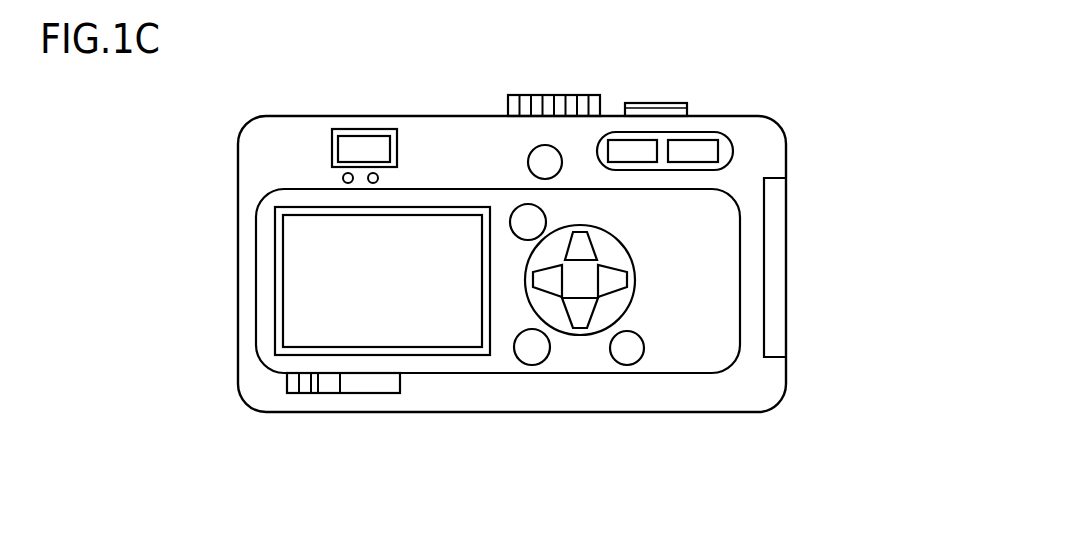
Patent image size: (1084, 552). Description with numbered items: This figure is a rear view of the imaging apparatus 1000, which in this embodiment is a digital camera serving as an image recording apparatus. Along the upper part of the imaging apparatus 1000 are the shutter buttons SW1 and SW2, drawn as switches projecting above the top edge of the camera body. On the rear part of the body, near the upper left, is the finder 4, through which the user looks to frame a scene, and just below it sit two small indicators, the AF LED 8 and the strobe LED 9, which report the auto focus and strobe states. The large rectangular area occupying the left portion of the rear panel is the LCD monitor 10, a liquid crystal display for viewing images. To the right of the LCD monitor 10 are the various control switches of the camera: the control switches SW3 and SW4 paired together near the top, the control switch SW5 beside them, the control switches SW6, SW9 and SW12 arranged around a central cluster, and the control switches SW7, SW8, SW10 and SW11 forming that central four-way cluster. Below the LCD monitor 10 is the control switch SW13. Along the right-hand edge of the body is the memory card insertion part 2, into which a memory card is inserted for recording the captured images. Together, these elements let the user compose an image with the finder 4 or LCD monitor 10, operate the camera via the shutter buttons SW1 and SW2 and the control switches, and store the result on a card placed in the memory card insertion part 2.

The imaging apparatus 1000 is at (301, 48).
The memory card insertion part 2 is at (787, 263).
The finder 4 is at (368, 129).
The AF LED 8 is at (342, 177).
The strobe LED 9 is at (380, 178).
The LCD monitor 10 is at (427, 350).
The shutter button SW1 is at (675, 103).
The shutter button SW2 is at (572, 95).
The control switch SW3 is at (643, 163).
The control switch SW4 is at (718, 150).
The control switch SW5 is at (527, 164).
The control switch SW6 is at (515, 235).
The control switch SW7 is at (593, 247).
The control switch SW8 is at (620, 293).
The control switch SW9 is at (642, 358).
The control switch SW10 is at (582, 330).
The control switch SW11 is at (545, 296).
The control switch SW12 is at (532, 365).
The control switch SW13 is at (320, 395).